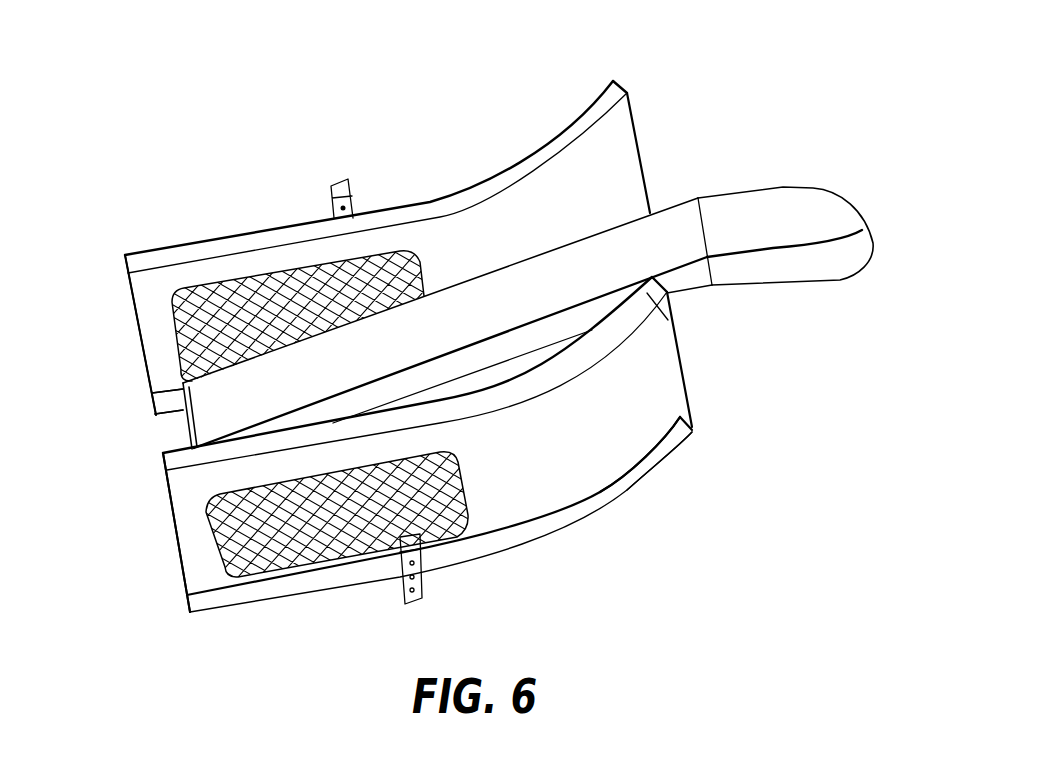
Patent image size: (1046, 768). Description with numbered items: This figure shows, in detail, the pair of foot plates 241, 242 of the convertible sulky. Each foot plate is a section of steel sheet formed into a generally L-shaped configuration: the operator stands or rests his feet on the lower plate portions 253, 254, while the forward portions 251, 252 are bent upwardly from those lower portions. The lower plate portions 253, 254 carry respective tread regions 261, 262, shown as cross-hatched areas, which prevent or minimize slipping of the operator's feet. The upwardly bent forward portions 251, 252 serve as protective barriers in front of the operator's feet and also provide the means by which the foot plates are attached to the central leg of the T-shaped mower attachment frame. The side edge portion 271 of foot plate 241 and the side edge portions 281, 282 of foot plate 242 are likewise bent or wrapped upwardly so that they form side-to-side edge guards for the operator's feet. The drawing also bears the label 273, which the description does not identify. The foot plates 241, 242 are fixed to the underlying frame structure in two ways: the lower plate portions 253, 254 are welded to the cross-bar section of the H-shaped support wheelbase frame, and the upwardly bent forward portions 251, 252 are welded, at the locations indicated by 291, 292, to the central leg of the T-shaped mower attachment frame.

The foot plate 241 is at (396, 206).
The foot plate 242 is at (593, 508).
The forward portion 251 is at (634, 127).
The forward portion 252 is at (675, 363).
The lower plate portion 253 is at (148, 298).
The lower plate portion 254 is at (200, 552).
The tread region 261 is at (217, 312).
The tread region 262 is at (250, 538).
The side edge portion 271 is at (607, 77).
The proximal end of shaft 273 is at (182, 430).
The side edge portion 281 is at (560, 368).
The side edge portion 282 is at (659, 451).
The weld 291 is at (654, 212).
The weld 292 is at (655, 290).